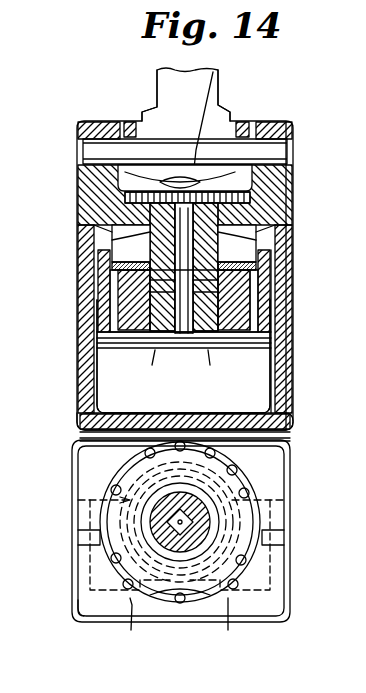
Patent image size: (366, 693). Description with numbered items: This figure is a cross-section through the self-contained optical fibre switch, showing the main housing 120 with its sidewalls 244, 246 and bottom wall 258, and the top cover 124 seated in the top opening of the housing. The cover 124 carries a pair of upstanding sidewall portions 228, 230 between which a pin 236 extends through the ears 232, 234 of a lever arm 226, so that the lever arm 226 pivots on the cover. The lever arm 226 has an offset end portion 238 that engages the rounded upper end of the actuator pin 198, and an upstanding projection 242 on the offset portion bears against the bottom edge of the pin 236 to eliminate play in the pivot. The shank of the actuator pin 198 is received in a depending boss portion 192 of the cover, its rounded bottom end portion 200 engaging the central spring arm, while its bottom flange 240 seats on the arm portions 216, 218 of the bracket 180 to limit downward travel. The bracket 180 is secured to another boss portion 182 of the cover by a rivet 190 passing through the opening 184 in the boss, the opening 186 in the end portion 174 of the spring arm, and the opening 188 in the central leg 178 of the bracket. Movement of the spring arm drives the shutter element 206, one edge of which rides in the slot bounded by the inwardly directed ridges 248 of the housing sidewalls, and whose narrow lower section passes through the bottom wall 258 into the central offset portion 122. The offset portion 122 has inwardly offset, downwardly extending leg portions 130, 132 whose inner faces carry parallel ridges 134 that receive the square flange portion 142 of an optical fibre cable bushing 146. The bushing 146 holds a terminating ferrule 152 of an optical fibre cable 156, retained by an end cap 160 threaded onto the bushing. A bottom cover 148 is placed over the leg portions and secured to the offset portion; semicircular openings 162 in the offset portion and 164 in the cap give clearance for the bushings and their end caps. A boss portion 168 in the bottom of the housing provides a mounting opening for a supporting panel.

The main housing 120 is at (78, 362).
The central offset portion 122 is at (84, 447).
The top cover 124 is at (290, 190).
The leg portion 130 is at (270, 572).
The leg portion 132 is at (90, 570).
The ridge 134 is at (179, 625).
The square flange portion 142 is at (150, 466).
The optical fibre cable bushing 146 is at (156, 500).
The bottom cover 148 is at (92, 622).
The terminating ferrule 152 is at (206, 522).
The optical fibre cable 156 is at (194, 524).
The end cap 160 is at (122, 522).
The semicircular opening 162 is at (236, 470).
The semicircular opening 164 is at (190, 600).
The boss portion 168 is at (262, 372).
The end portion 174 is at (255, 287).
The central leg 178 is at (150, 369).
The bracket 180 is at (215, 366).
The boss portion 182 is at (92, 210).
The opening 184 is at (290, 205).
The opening 186 is at (262, 312).
The opening 188 is at (103, 330).
The rivet 190 is at (140, 178).
The depending boss portion 192 is at (290, 231).
The actuator pin 198 is at (78, 236).
The rounded bottom end portion 200 is at (97, 297).
The shutter element 206 is at (112, 252).
The arm portion 216 is at (280, 350).
The arm portion 218 is at (140, 300).
The lever arm 226 is at (176, 70).
The upstanding sidewall portion 228 is at (284, 123).
The upstanding sidewall portion 230 is at (108, 124).
The ear 232 is at (246, 123).
The ear 234 is at (128, 123).
The pin 236 is at (286, 152).
The offset end portion 238 is at (165, 178).
The bottom flange 240 is at (284, 255).
The upstanding projection 242 is at (216, 112).
The sidewall 244 is at (288, 402).
The sidewall 246 is at (78, 400).
The ridge 248 is at (112, 274).
The bottom wall 258 is at (288, 442).